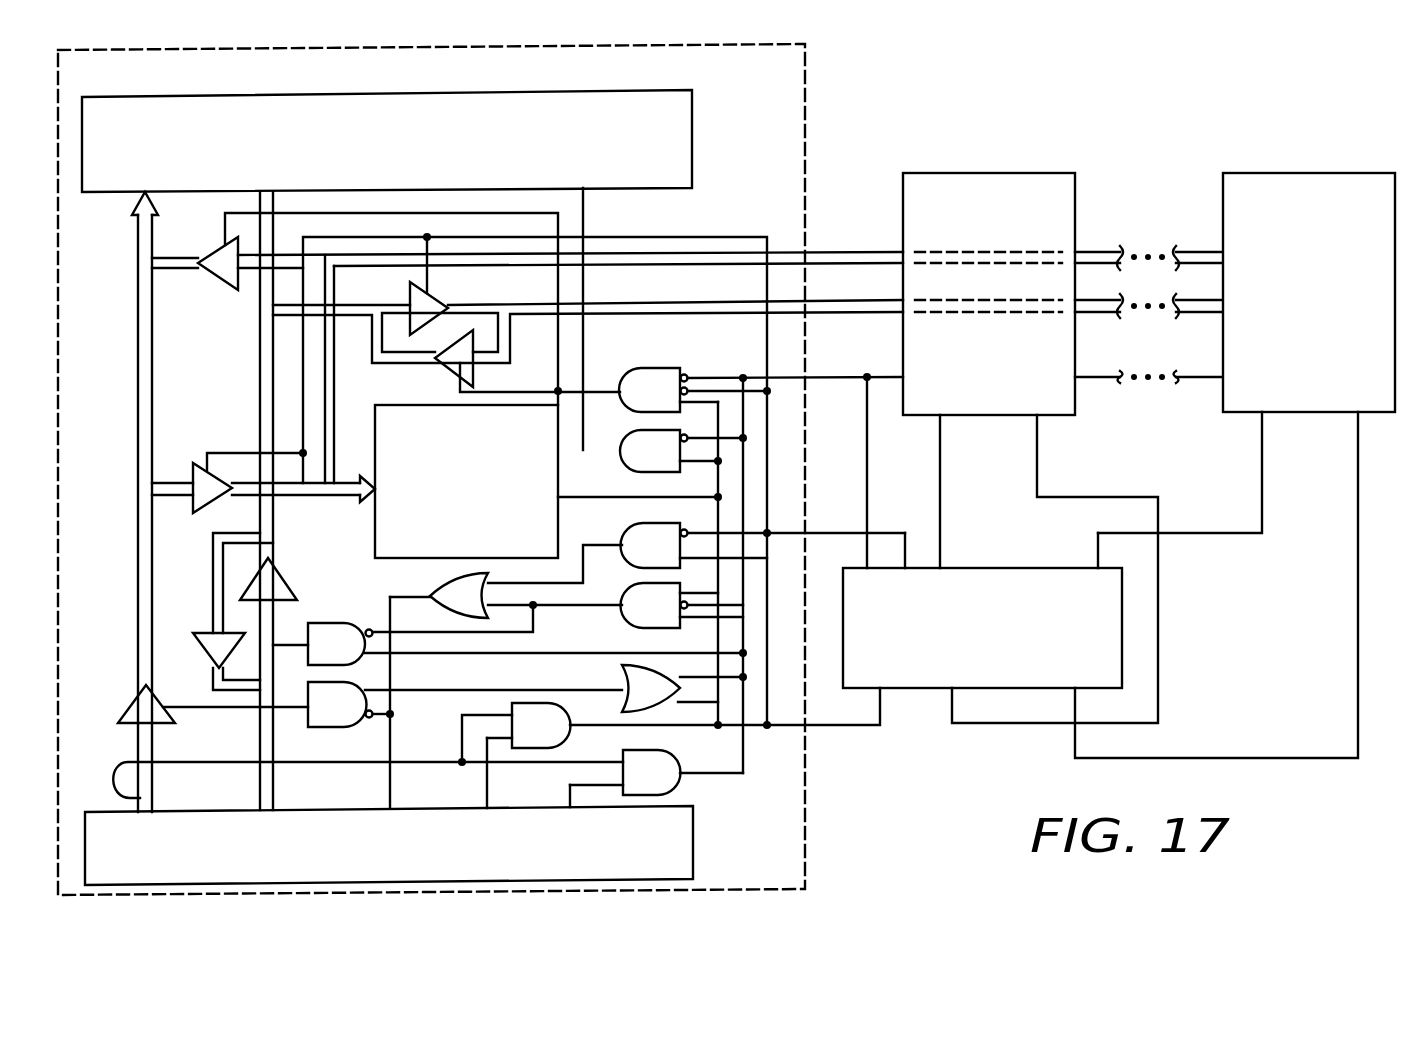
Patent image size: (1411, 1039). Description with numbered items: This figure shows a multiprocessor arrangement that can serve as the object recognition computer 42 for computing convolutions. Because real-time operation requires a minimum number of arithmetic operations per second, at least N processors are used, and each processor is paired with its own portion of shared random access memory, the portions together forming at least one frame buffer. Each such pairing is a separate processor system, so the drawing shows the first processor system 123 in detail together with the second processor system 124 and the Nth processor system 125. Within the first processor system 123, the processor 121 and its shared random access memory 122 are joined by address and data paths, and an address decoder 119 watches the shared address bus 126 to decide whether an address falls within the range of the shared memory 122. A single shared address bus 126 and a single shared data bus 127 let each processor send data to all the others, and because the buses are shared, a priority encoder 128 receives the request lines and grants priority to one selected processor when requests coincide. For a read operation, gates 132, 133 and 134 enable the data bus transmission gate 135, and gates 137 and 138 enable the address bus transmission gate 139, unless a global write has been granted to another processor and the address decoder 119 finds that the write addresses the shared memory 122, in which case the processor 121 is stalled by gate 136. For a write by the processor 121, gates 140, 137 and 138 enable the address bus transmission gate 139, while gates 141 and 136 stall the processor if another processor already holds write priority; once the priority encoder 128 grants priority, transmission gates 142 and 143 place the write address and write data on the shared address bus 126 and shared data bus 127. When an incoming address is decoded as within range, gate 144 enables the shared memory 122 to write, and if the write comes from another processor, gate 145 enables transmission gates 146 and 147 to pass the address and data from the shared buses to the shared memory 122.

The object recognition computer 42 is at (996, 94).
The address decoder 119 is at (453, 403).
The processor 121 is at (700, 843).
The shared random access memory 122 is at (582, 92).
The processor system No. 1 123 is at (812, 90).
The processor system #2 124 is at (992, 172).
The processor system #N 125 is at (1310, 172).
The shared address bus 126 is at (850, 252).
The shared data bus 127 is at (853, 312).
The priority encoder 128 is at (972, 568).
The gate 132 is at (673, 764).
The gate 133 is at (630, 618).
The gate 134 is at (337, 630).
The data bus transmission gate 135 is at (215, 650).
The gate 136 is at (436, 584).
The gate 137 is at (628, 683).
The gate 138 is at (337, 724).
The address bus transmission gate 139 is at (136, 704).
The gate 140 is at (560, 718).
The gate 141 is at (640, 535).
The transmission gate 142 is at (205, 508).
The transmission gate 143 is at (432, 302).
The gate 144 is at (640, 464).
The gate 145 is at (648, 375).
The transmission gate 146 is at (470, 368).
The transmission gate 147 is at (232, 278).